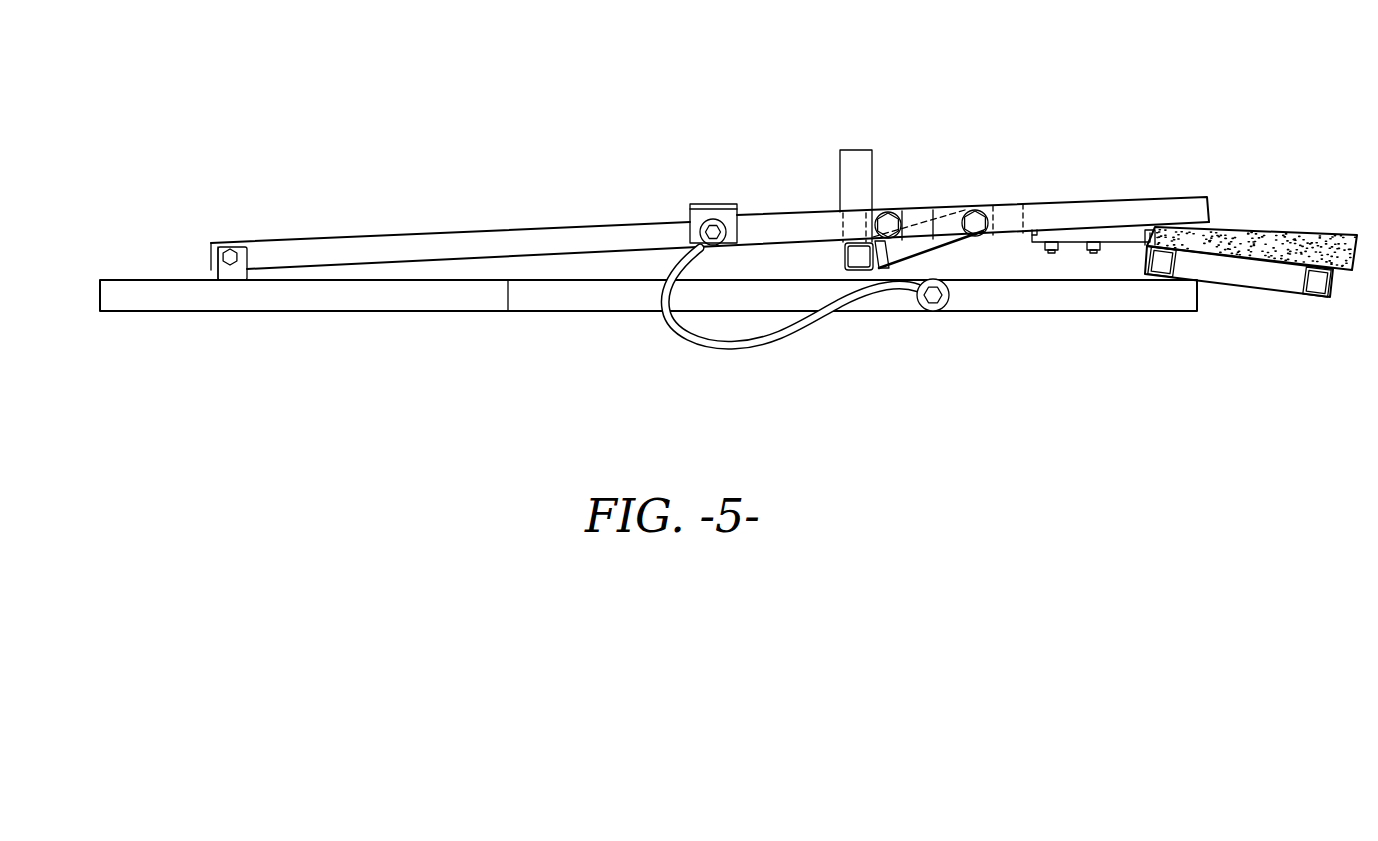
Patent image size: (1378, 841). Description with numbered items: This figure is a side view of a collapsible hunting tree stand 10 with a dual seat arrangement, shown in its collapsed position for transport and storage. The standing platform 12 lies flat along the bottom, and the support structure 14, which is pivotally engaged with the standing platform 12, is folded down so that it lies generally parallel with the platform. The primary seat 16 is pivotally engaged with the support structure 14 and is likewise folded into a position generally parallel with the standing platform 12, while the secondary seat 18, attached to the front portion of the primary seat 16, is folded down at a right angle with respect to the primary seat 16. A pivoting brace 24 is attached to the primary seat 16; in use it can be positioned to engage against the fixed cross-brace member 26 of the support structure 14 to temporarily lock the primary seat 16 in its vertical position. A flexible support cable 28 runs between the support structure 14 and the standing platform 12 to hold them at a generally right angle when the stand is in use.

The hunting tree stand 10 is at (511, 114).
The standing platform 12 is at (602, 312).
The support structure 14 is at (549, 240).
The primary seat 16 is at (1112, 202).
The secondary seat 18 is at (1272, 223).
The pivoting brace 24 is at (947, 243).
The fixed cross-brace member 26 is at (848, 255).
The flexible support cables 28 is at (777, 348).